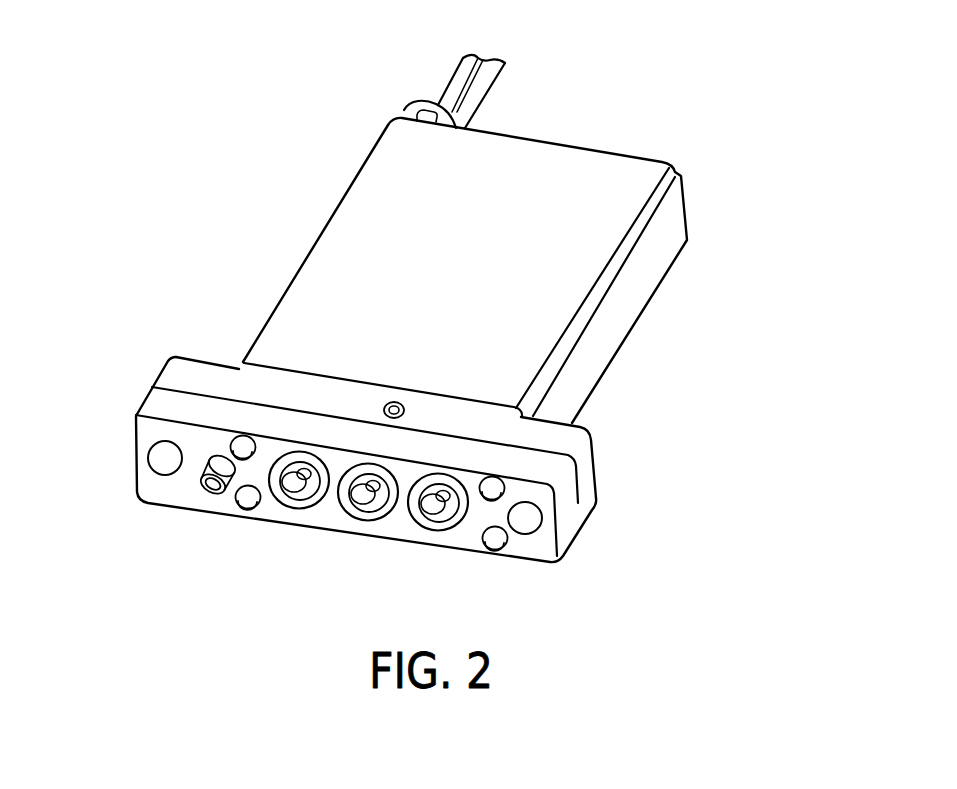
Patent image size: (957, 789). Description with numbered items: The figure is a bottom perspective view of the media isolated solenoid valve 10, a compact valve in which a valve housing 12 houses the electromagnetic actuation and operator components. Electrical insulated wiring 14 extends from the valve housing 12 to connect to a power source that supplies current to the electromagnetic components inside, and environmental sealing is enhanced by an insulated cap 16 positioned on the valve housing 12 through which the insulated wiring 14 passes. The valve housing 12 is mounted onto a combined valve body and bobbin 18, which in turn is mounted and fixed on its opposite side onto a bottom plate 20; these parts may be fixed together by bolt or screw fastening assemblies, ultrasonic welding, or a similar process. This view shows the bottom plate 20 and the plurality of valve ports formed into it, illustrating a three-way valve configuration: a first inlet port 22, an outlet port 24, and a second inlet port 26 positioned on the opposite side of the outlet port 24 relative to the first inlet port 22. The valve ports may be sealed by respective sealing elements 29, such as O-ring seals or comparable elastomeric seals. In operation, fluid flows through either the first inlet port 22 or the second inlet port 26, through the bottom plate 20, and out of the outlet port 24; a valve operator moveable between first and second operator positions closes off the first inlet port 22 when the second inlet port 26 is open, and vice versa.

The valve 10 is at (286, 179).
The valve housing 12 is at (673, 210).
The electrical insulated wiring 14 is at (462, 67).
The insulated cap 16 is at (405, 108).
The combined valve body and bobbin 18 is at (176, 370).
The bottom plate 20 is at (157, 406).
The first inlet port 22 is at (314, 476).
The outlet port 24 is at (382, 492).
The second inlet port 26 is at (448, 500).
The sealing element 29 is at (268, 480).